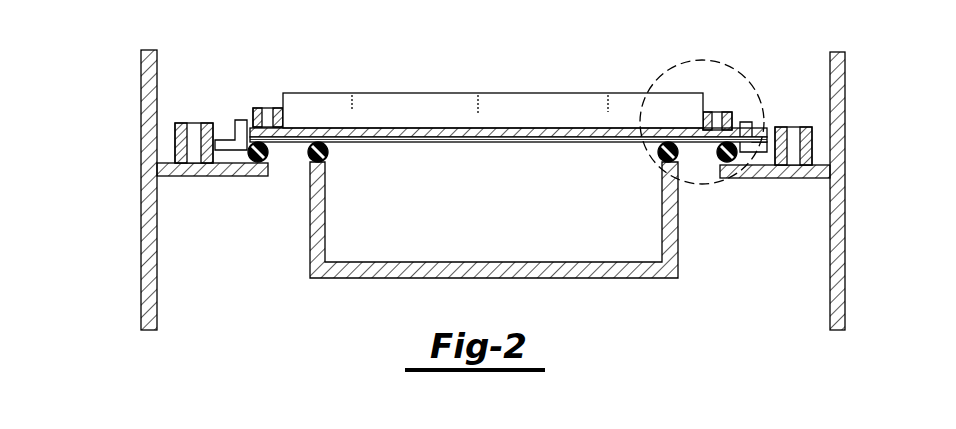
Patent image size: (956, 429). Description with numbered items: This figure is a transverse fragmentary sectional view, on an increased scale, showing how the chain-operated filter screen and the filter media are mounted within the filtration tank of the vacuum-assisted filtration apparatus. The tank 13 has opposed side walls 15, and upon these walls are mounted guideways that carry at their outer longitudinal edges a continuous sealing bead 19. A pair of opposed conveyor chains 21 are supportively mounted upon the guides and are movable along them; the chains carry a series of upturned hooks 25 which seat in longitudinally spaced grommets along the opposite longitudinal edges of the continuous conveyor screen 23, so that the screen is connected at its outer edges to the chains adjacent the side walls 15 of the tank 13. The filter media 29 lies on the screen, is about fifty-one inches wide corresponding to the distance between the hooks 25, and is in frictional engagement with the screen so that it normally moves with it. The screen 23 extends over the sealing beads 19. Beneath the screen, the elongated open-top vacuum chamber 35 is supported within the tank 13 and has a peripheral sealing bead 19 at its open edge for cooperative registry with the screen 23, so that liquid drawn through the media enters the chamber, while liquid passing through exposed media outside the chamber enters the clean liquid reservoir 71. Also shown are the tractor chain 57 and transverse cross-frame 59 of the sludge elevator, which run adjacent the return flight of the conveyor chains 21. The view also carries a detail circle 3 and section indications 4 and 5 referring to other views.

The detail circle 3 is at (690, 62).
The section line 4- 4 is at (272, 63).
The section line 5- 5 is at (112, 88).
The tank 13 is at (138, 242).
The side wall 15 is at (148, 164).
The sealing bead 19 is at (252, 164).
The conveyor chain 21 is at (176, 151).
The conveyor screen 23 is at (571, 143).
The upturned hook 25 is at (240, 120).
The filter media 29 is at (556, 128).
The vacuum chamber 35 is at (680, 256).
The tractor chain 57 is at (257, 107).
The cross-frame 59 is at (415, 110).
The clean liquid reservoir 71 is at (806, 280).